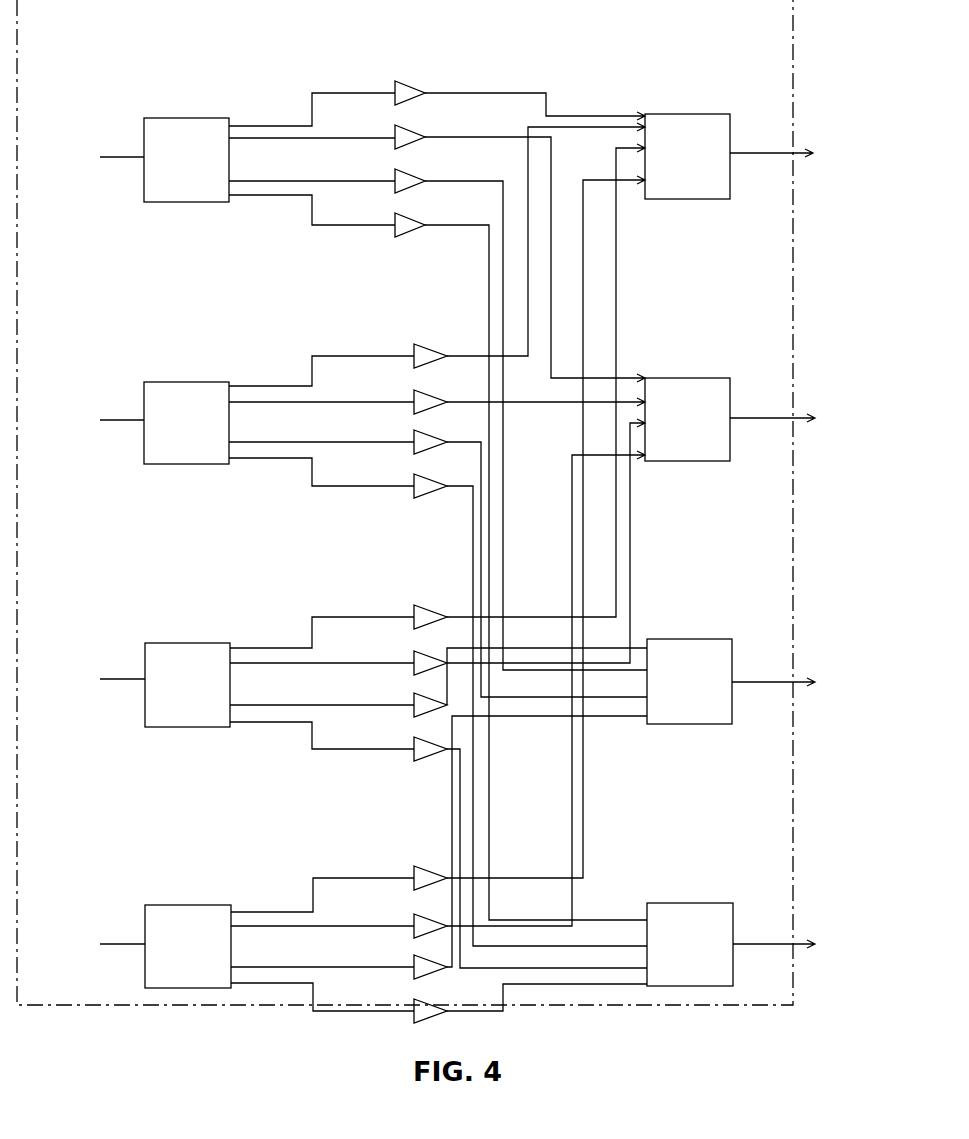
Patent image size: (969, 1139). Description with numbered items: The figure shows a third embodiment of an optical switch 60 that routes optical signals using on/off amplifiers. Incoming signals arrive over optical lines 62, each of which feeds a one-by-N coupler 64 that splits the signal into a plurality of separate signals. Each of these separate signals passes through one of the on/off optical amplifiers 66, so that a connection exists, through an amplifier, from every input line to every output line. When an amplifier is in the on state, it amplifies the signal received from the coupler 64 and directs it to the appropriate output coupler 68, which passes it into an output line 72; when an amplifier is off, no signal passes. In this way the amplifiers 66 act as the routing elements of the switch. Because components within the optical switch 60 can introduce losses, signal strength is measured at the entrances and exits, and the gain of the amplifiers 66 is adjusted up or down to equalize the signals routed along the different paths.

The optical switch 60 is at (301, 1035).
The optical lines 62 is at (113, 157).
The 1×N coupler 64 is at (186, 202).
The on/off optical amplifiers 66 is at (428, 225).
The output coupler 68 is at (684, 199).
The output line 72 is at (773, 153).